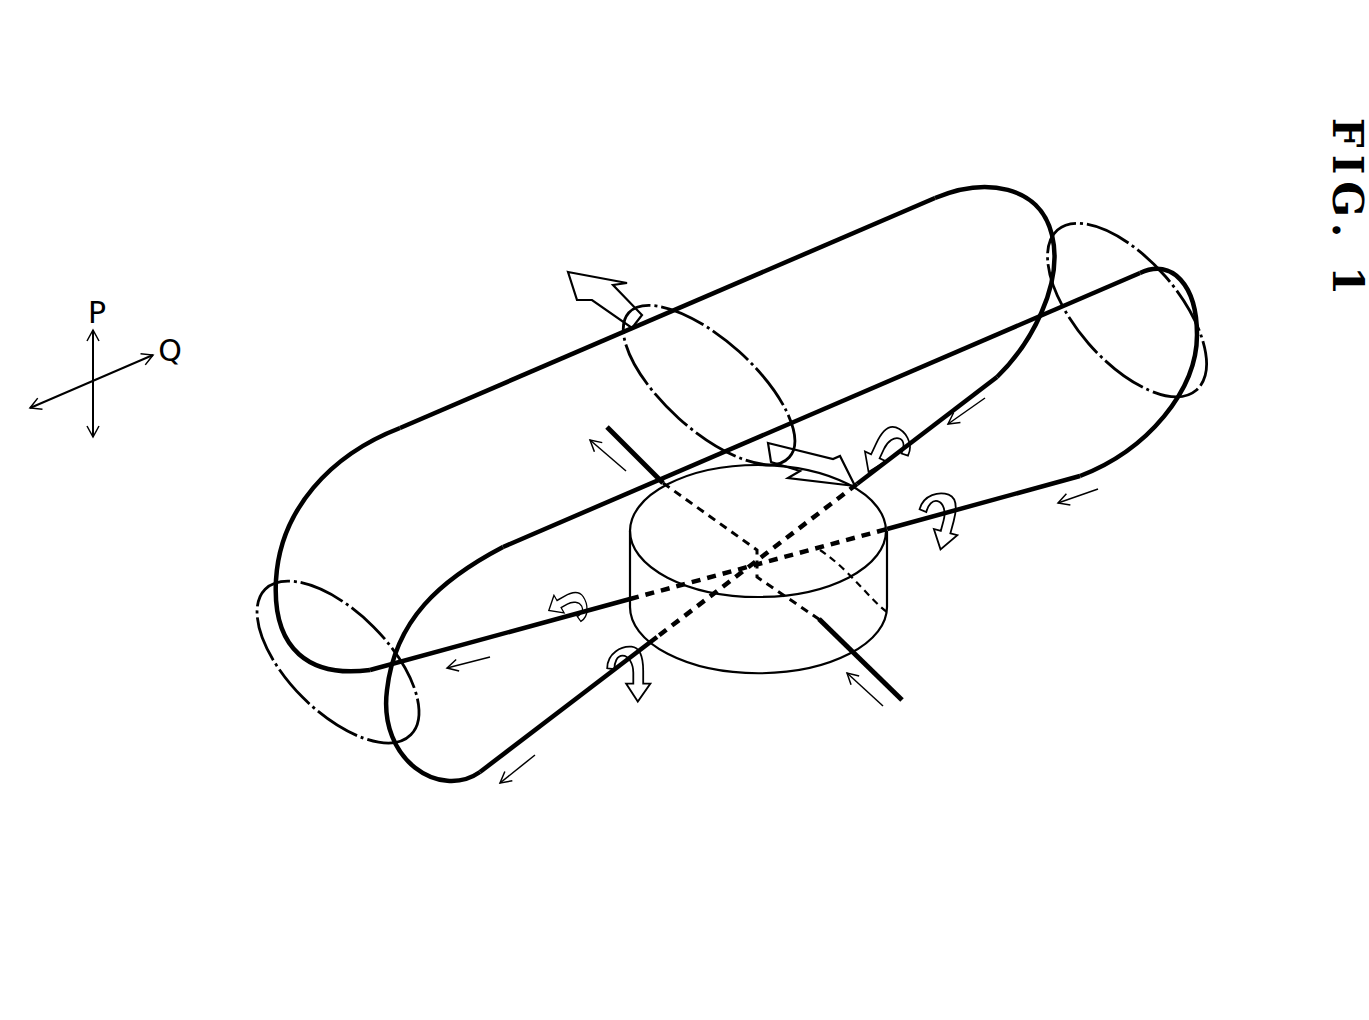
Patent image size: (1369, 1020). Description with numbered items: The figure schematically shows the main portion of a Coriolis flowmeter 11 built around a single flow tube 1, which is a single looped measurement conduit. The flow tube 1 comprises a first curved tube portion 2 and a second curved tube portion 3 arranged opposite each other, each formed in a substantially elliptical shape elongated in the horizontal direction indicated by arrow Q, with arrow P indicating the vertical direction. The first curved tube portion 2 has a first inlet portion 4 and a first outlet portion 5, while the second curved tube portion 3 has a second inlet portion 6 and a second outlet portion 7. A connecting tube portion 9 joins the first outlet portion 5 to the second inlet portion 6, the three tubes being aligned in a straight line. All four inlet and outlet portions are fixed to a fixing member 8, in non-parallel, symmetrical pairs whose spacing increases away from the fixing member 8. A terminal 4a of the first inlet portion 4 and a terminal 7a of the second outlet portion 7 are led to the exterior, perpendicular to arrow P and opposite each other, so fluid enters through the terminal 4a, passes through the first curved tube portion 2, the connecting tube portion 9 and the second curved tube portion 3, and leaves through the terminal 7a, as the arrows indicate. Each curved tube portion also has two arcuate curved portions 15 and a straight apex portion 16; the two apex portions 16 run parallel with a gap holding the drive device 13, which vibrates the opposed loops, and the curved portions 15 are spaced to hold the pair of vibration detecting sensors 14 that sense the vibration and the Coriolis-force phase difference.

The flow tube 1 is at (330, 349).
The first curved tube portion 2 is at (503, 545).
The second curved tube portion 3 is at (368, 443).
The first inlet portion 4 is at (673, 640).
The terminal 4a is at (893, 687).
The first outlet portion 5 is at (908, 526).
The second inlet portion 6 is at (603, 600).
The second outlet portion 7 is at (862, 476).
The terminal 7a is at (628, 447).
The fixing member 8 is at (763, 652).
The connecting tube portion 9 is at (887, 612).
The Coriolis flowmeter 11 is at (1010, 152).
The drive device 13 is at (743, 340).
The vibration detecting sensors 14 is at (1130, 247).
The curved portions 15 is at (1033, 200).
The apex portion 16 is at (592, 352).